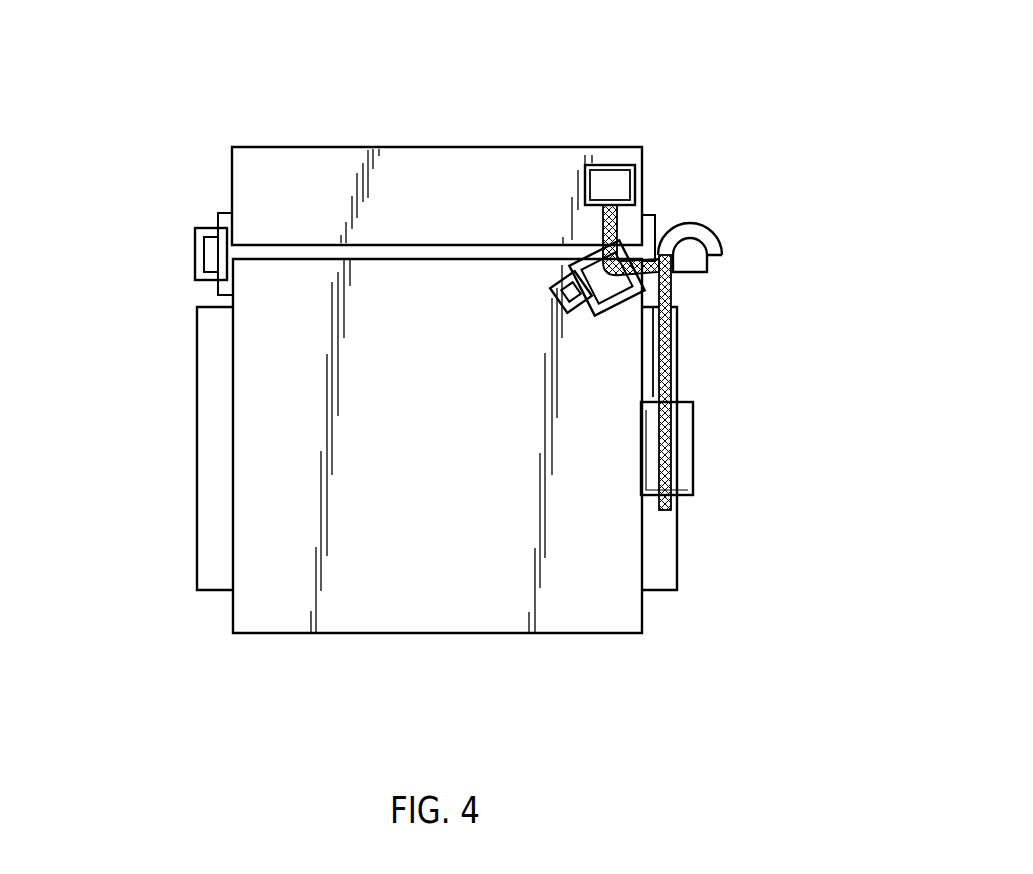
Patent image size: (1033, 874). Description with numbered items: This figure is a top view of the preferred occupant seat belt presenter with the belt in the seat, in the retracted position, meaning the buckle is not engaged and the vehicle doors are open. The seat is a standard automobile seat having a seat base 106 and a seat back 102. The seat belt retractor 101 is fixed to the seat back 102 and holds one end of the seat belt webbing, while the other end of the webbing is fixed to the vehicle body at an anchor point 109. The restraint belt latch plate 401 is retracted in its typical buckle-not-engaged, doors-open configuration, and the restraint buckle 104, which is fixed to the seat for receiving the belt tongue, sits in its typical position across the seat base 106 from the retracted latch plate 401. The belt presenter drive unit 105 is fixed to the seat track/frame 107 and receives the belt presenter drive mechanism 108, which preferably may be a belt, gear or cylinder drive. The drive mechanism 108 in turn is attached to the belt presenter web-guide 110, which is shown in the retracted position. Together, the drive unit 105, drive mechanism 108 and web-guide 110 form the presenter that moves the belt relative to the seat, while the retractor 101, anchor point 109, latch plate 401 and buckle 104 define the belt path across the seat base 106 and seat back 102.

The seat belt retractor 101 is at (603, 165).
The seat back 102 is at (243, 177).
The seat belt buckle 104 is at (193, 256).
The belt presenter drive unit 105 is at (695, 453).
The seat base 106 is at (513, 615).
The seat track/frame 107 is at (210, 585).
The belt presenter drive mechanism 108 is at (678, 295).
The anchor point 109 is at (708, 265).
The belt presenter web-guide 110 is at (721, 218).
The restraint belt latch plate 401 is at (622, 240).